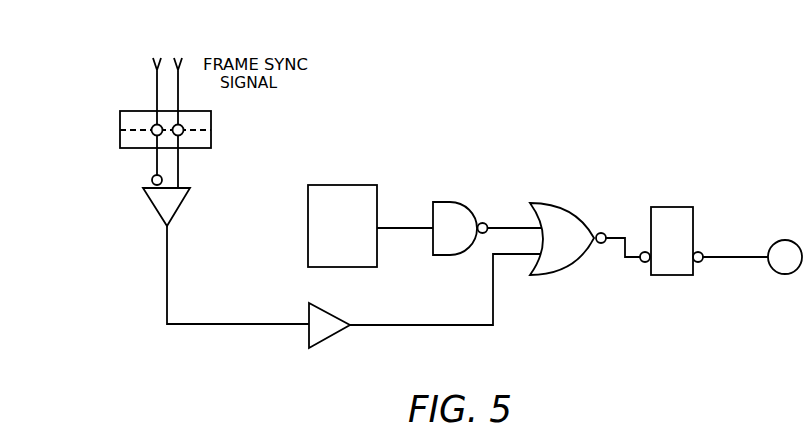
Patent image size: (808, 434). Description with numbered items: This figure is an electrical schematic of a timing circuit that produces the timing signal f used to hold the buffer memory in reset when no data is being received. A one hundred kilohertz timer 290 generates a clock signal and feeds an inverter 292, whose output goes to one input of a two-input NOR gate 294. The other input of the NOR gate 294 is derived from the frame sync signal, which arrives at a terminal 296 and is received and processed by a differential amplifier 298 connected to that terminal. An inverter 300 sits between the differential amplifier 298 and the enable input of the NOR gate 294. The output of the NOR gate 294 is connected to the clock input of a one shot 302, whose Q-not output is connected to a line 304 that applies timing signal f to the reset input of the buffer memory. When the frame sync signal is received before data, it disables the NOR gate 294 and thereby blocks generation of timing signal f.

The timer 290 is at (362, 185).
The inverter 292 is at (445, 202).
The NOR gate 294 is at (549, 203).
The terminal 296 is at (120, 130).
The differential amplifier 298 is at (157, 212).
The inverter 300 is at (309, 333).
The one shot 302 is at (662, 207).
The line 304 is at (722, 257).